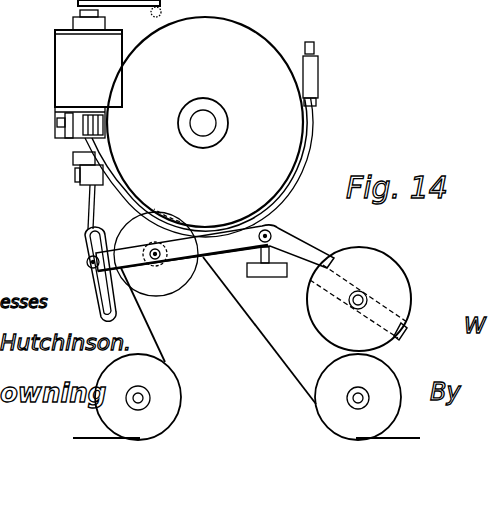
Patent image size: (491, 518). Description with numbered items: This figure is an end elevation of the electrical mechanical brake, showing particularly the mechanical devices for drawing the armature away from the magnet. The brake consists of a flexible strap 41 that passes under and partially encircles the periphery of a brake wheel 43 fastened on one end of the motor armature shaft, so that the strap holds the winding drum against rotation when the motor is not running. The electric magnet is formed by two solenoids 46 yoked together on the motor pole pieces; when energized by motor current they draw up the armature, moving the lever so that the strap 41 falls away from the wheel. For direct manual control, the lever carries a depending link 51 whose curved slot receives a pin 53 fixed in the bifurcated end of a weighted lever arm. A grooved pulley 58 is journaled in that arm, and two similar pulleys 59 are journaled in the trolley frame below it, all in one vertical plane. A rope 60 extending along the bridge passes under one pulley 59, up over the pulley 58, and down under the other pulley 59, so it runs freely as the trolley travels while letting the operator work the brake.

The flexible strap 41 is at (201, 139).
The brake wheel 43 is at (205, 122).
The solenoids 46 is at (72, 74).
The depending link 51 is at (234, 251).
The pin 53 is at (87, 262).
The grooved pulley 58 is at (156, 254).
The pulleys 59 is at (248, 397).
The rope 60 is at (218, 330).